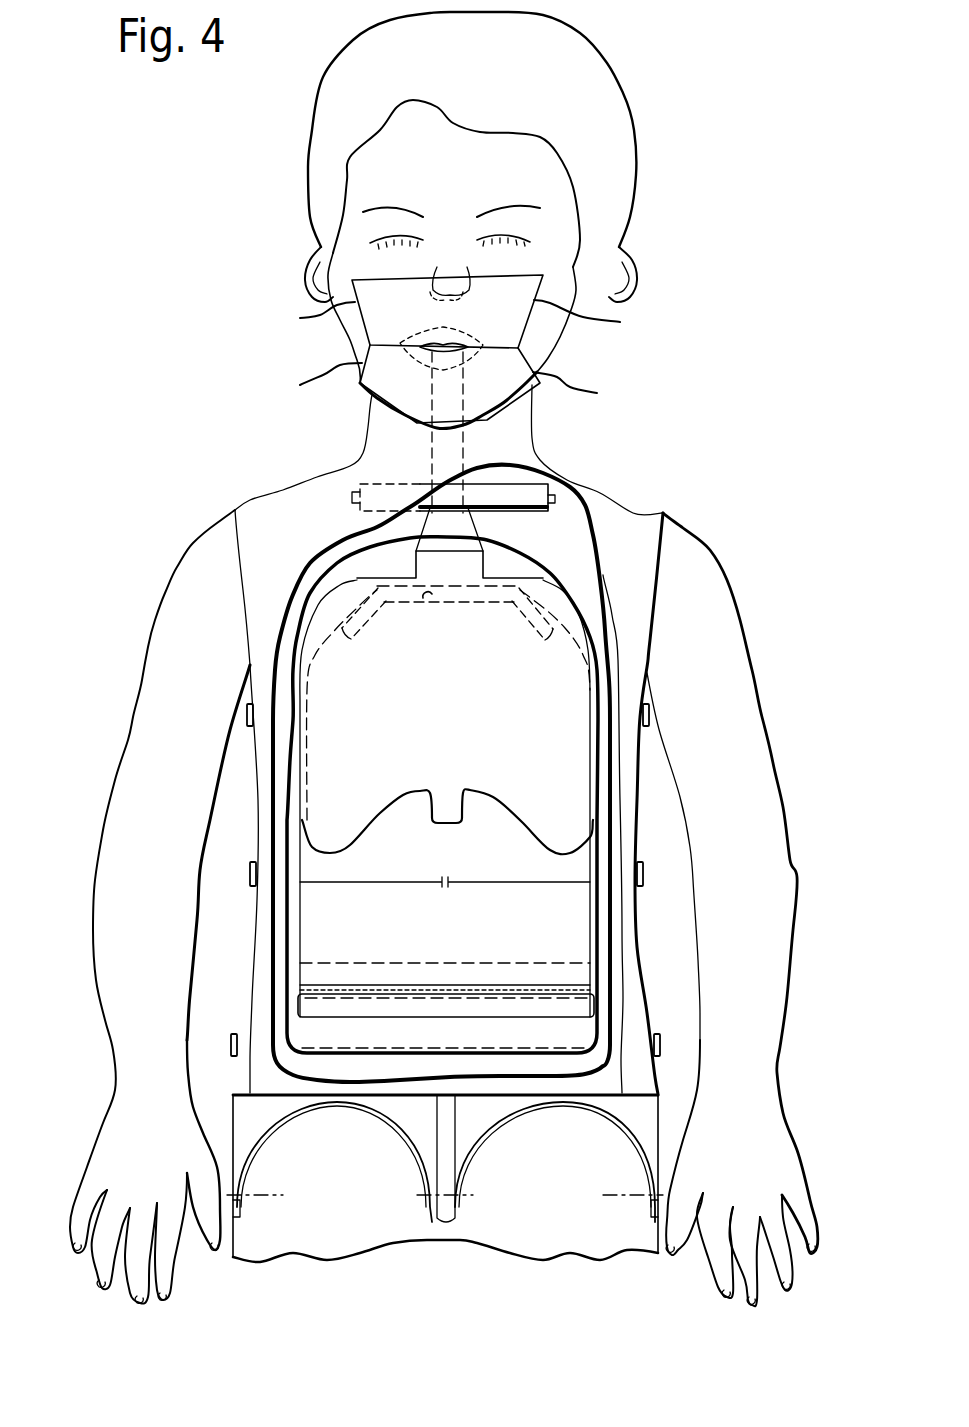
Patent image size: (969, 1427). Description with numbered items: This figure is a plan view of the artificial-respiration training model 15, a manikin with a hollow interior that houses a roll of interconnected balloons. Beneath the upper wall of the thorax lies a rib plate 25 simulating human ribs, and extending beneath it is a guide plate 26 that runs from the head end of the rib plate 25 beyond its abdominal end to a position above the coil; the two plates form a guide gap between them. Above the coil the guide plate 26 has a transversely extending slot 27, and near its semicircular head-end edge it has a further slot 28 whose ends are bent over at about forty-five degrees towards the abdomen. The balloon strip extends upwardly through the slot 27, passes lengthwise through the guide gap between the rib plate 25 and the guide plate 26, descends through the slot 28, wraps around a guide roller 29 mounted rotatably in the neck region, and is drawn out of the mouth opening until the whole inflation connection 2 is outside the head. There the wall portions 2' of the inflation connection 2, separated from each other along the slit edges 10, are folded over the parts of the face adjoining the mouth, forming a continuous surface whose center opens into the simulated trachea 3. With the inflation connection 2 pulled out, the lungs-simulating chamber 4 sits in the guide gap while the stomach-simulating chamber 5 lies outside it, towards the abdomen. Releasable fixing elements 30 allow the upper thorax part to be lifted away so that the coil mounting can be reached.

The inflation connection 2 is at (413, 324).
The wall portions 2' is at (492, 386).
The simulated trachea 3 is at (440, 459).
The lungs-simulating chamber 4 is at (398, 872).
The stomach-simulating chamber 5 is at (398, 945).
The slit edges 10 is at (300, 318).
The model 15 is at (203, 508).
The rib plate 25 is at (536, 816).
The guide plate 26 is at (603, 937).
The slot 27 is at (432, 1010).
The further transversely extending slot 28 is at (430, 599).
The guide roller 29 is at (536, 496).
The fixing elements 30 is at (232, 1043).